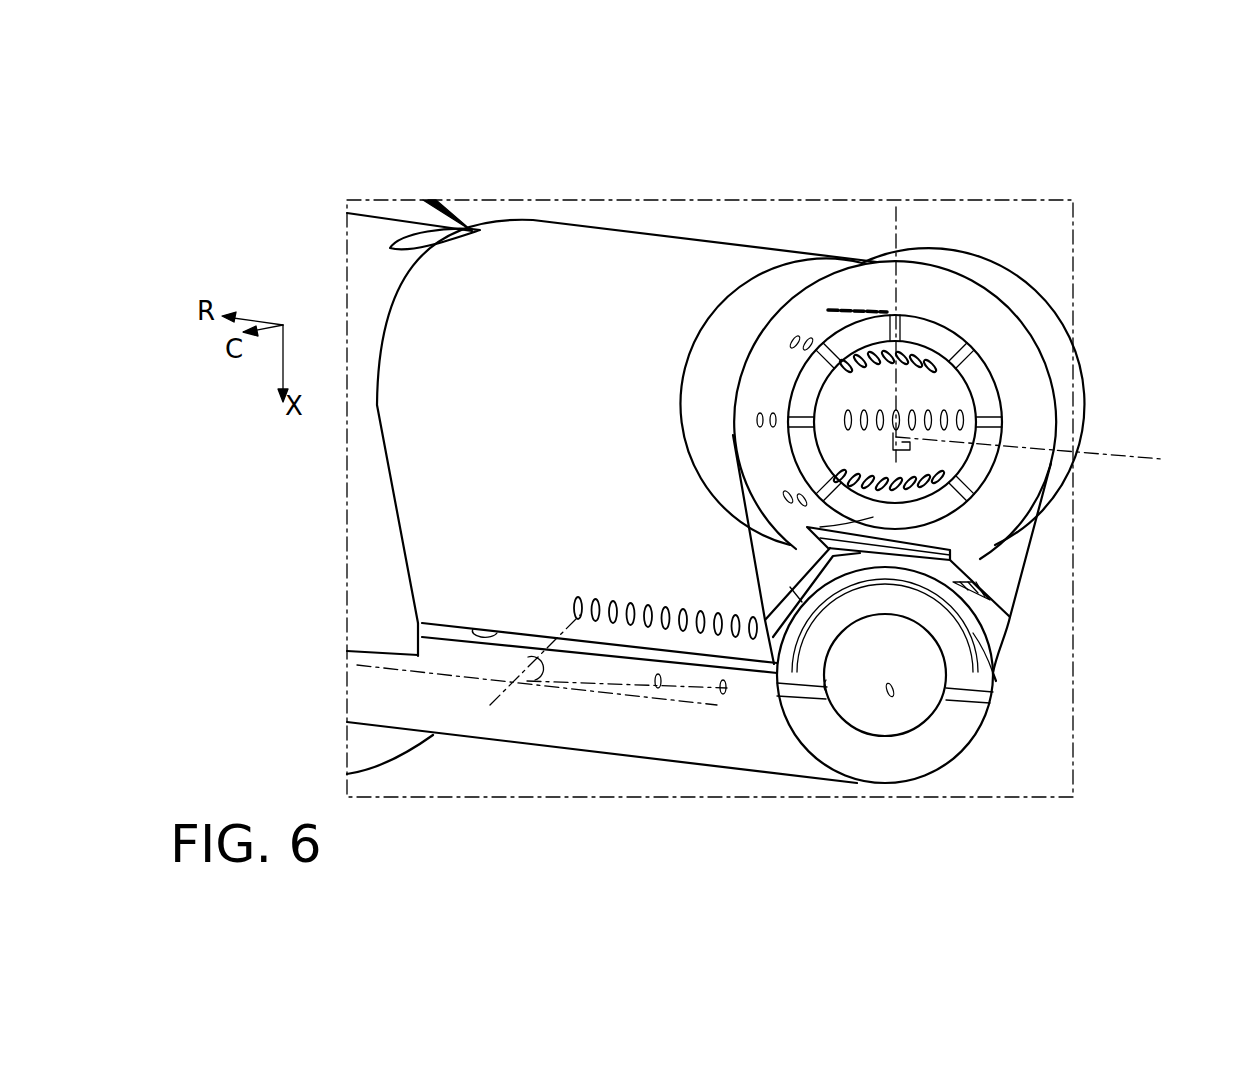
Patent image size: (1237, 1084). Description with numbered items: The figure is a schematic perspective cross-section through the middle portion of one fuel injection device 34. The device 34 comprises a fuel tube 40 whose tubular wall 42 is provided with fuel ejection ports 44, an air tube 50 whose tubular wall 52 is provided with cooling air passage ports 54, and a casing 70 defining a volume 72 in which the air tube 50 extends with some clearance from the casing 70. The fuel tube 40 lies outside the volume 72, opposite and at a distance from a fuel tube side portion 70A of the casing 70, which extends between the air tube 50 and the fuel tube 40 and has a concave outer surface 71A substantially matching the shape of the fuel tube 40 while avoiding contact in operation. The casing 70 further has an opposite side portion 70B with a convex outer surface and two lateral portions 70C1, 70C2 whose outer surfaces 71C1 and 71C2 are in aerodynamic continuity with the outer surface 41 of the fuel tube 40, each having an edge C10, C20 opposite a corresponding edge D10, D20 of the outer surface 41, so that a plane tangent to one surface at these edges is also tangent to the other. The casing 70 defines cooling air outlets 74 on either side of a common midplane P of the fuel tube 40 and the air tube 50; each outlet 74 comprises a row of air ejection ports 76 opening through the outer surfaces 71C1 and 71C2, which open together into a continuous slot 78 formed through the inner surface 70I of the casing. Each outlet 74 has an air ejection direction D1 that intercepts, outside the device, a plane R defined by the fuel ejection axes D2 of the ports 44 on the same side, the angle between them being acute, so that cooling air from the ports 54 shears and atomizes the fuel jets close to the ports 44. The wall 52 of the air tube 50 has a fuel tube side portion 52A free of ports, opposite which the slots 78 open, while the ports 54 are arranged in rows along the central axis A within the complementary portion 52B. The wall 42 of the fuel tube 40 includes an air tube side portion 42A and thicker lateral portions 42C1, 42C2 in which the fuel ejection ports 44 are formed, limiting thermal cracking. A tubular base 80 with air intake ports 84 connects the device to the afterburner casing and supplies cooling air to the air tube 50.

The device 34 is at (944, 226).
The fuel tube 40 is at (1022, 820).
The outer surface of the fuel tube 41 is at (890, 577).
The tubular wall 42 is at (964, 754).
The air tube side portion 42A is at (993, 676).
The lateral portion 42C1 is at (810, 703).
The lateral portion 42C2 is at (977, 710).
The fuel ejection ports 44 is at (723, 693).
The air tube 50 is at (1135, 310).
The tubular wall 52 is at (995, 371).
The fuel tube side portion 52A is at (807, 528).
The portion of the tubular wall 52B is at (860, 328).
The cooling air passage ports 54 is at (957, 507).
The casing 70 is at (605, 287).
The fuel tube side portion 70A is at (895, 600).
The opposite side portion 70B is at (862, 285).
The lateral portion 70C1 is at (752, 473).
The lateral portion 70C2 is at (1033, 476).
The inner surface of the casing 70I is at (945, 305).
The concave outer surface 71A is at (998, 670).
The outer surface 71C1 is at (440, 610).
The outer surface 71C2 is at (1008, 657).
The volume 72 is at (928, 307).
The cooling air outlets 74 is at (575, 598).
The air ejection ports 76 is at (505, 488).
The continuous slot 78 is at (952, 571).
The base 80 is at (396, 229).
The air intake port 84 is at (397, 240).
The central axis A is at (1118, 455).
The common midplane P is at (893, 442).
The plane R is at (573, 685).
The edge C10 is at (472, 628).
The edge C20 is at (993, 677).
The air ejection direction D1 is at (527, 672).
The fuel ejection axes D2 is at (687, 688).
The edge D10 is at (418, 622).
The edge D20 is at (993, 680).